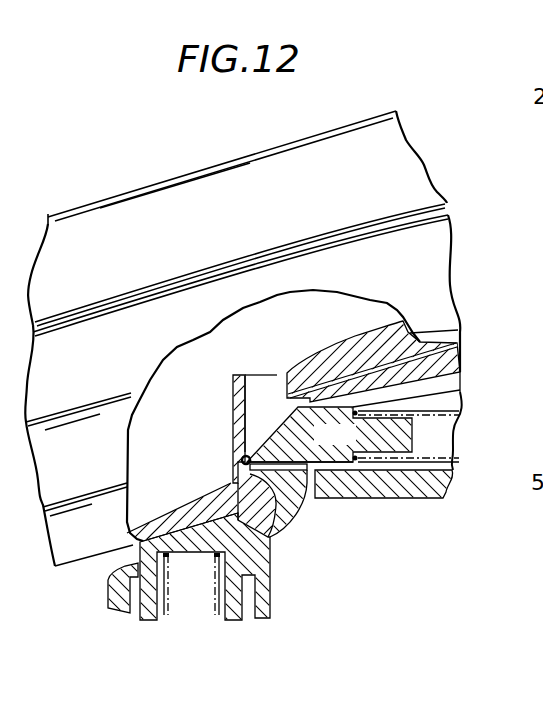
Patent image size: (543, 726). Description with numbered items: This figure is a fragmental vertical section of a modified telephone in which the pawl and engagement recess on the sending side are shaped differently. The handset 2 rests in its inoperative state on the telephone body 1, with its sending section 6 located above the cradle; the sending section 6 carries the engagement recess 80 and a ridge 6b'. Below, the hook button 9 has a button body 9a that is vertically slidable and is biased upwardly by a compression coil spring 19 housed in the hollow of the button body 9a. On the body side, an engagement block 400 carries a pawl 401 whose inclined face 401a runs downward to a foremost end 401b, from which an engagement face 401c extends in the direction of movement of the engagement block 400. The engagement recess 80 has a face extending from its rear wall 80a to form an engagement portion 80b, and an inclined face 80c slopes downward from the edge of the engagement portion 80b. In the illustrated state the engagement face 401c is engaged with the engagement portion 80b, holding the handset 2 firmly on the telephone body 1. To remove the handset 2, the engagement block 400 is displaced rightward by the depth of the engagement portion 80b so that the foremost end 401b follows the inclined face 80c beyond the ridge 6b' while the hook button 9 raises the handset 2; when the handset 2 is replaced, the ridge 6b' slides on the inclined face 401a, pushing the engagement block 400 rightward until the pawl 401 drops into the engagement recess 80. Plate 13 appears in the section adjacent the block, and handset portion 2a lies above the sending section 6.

The telephone body 1 is at (104, 611).
The handset 2 is at (61, 208).
The panel portion 2a is at (411, 271).
The sending section 6 is at (87, 456).
The ridge 6b' is at (302, 514).
The hook button 9 is at (147, 626).
The button body 9a is at (223, 539).
The plate 13 is at (432, 494).
The compression coil spring 19 is at (172, 612).
The engagement recess 80 is at (256, 398).
The rear wall 80a is at (247, 400).
The engagement portion 80b is at (246, 452).
The inclined face 80c is at (256, 467).
The engagement block 400 is at (466, 428).
The pawl 401 is at (329, 434).
The inclined face 401a is at (258, 445).
The foremost end 401b is at (241, 457).
The engagement face 401c is at (276, 471).